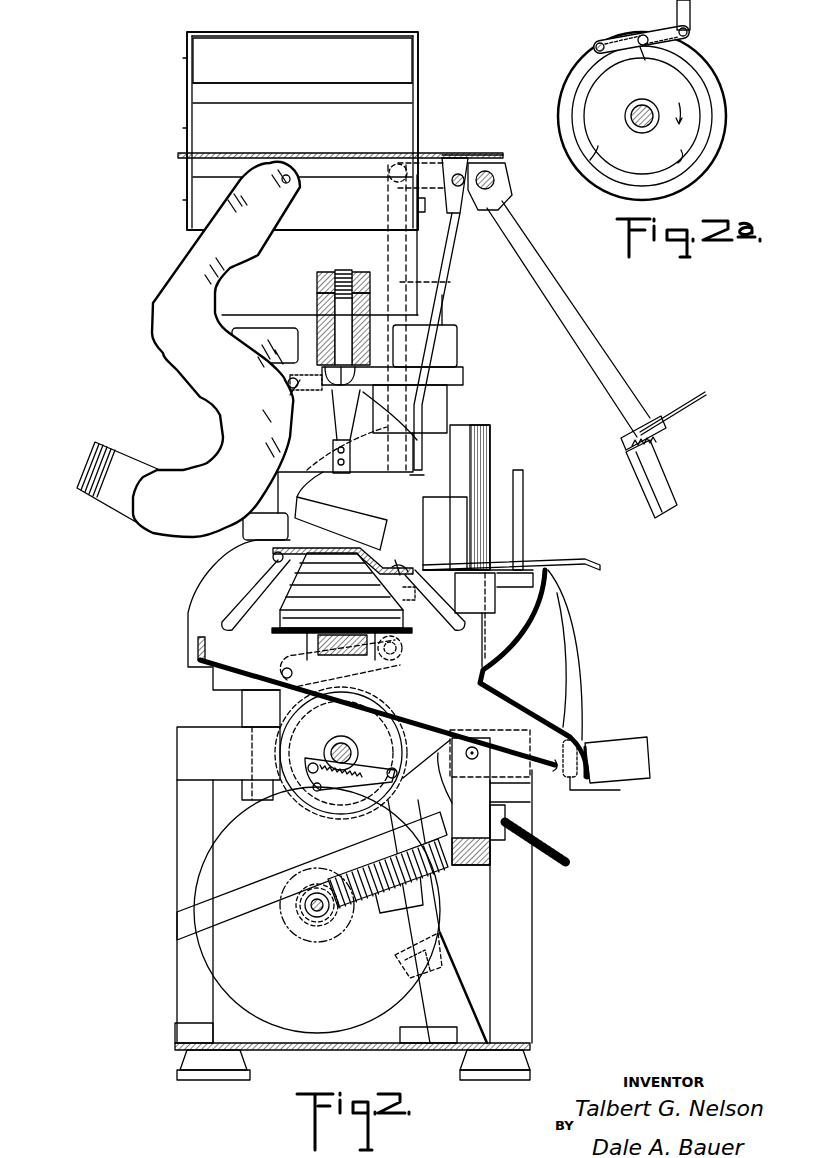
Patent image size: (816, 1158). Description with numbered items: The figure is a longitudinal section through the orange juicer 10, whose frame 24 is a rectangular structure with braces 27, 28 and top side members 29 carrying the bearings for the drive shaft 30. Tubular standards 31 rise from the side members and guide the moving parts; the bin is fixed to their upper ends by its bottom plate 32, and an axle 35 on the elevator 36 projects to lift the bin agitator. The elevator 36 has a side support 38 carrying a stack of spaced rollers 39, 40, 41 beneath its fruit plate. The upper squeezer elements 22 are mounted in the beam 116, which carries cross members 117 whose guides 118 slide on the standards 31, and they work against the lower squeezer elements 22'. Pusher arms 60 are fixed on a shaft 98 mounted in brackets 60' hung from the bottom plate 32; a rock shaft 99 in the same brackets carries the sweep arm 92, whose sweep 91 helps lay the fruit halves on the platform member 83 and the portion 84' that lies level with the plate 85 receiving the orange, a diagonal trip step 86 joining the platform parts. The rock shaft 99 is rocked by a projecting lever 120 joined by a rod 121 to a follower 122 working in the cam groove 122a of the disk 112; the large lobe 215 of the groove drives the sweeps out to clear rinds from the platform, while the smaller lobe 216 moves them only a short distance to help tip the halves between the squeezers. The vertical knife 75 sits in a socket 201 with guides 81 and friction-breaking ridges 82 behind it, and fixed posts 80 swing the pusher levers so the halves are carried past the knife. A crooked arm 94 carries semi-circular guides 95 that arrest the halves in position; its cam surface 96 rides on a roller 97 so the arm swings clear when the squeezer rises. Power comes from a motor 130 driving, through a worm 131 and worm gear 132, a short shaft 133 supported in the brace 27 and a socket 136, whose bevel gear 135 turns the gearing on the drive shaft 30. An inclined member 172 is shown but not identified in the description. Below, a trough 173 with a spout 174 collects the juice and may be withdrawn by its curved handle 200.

In FIG. 7, the orange juicer 10 is at (176, 112).
In FIG. 7, the upper squeezer elements 22 is at (347, 440).
In FIG. 7, the squeezer element 22' is at (325, 606).
In FIG. 7, the frame 24 is at (183, 968).
In FIG. 7, the brace 27 is at (242, 905).
In FIG. 7, the brace 28 is at (466, 866).
In FIG. 7, the top side members 29 is at (190, 759).
In FIG. 7, the drive shaft 30 is at (333, 752).
In FIG. 7a, the drive shaft 30 is at (663, 100).
In FIG. 7, the standards 31 is at (452, 233).
In FIG. 7, the bottom plate 32 is at (184, 155).
In FIG. 7, the axle 35 is at (418, 208).
In FIG. 7, the elevator 36 is at (177, 78).
In FIG. 7, the support 38 is at (419, 92).
In FIG. 7, the roller 39 is at (200, 208).
In FIG. 7, the roller 40 is at (205, 118).
In FIG. 7, the roller 41 is at (319, 52).
In FIG. 7, the pusher arms 60 is at (596, 359).
In FIG. 7, the brackets 60' is at (472, 134).
In FIG. 7, the knife 75 is at (484, 445).
In FIG. 7, the posts 80 is at (522, 495).
In FIG. 7, the guides 81 is at (419, 483).
In FIG. 7, the ridges 82 is at (450, 527).
In FIG. 7, the platform member 83 is at (270, 603).
In FIG. 7, the platform portion 84' is at (413, 601).
In FIG. 7, the plate 85 is at (570, 572).
In FIG. 7, the trip step 86 is at (396, 565).
In FIG. 7, the sweep 91 is at (345, 515).
In FIG. 7, the sweep arm 92 is at (440, 268).
In FIG. 7, the crooked arm 94 is at (172, 330).
In FIG. 7, the semi-circular guides 95 is at (95, 462).
In FIG. 7, the cam surface 96 is at (295, 385).
In FIG. 7, the roller 97 is at (296, 378).
In FIG. 7, the shaft 98 is at (497, 178).
In FIG. 7, the rock shaft 99 is at (464, 172).
In FIG. 7a, the disk 112 is at (708, 62).
In FIG. 7, the beam 116 is at (322, 333).
In FIG. 7, the cross members 117 is at (452, 377).
In FIG. 7, the guides 118 is at (446, 345).
In FIG. 7, the projecting lever 120 is at (432, 163).
In FIG. 7, the rod 121 is at (441, 282).
In FIG. 7a, the rod 121 is at (691, 16).
In FIG. 7, the follower 122 is at (352, 676).
In FIG. 7a, the follower 122 is at (617, 32).
In FIG. 7a, the cam groove 122a is at (680, 158).
In FIG. 7, the motor 130 is at (303, 995).
In FIG. 7, the worm 131 is at (328, 942).
In FIG. 7, the worm gear 132 is at (370, 920).
In FIG. 7, the short shaft 133 is at (412, 920).
In FIG. 7, the bevel gear 135 is at (358, 827).
In FIG. 7, the socket 136 is at (440, 958).
In FIG. 7, the inclined bar 172 is at (395, 656).
In FIG. 7, the trough 173 is at (540, 640).
In FIG. 7, the spout 174 is at (576, 727).
In FIG. 7, the curved handle 200 is at (572, 665).
In FIG. 7, the socket 201 is at (532, 635).
In FIG. 7a, the large lobe 215 is at (641, 52).
In FIG. 7a, the smaller lobe 216 is at (596, 150).